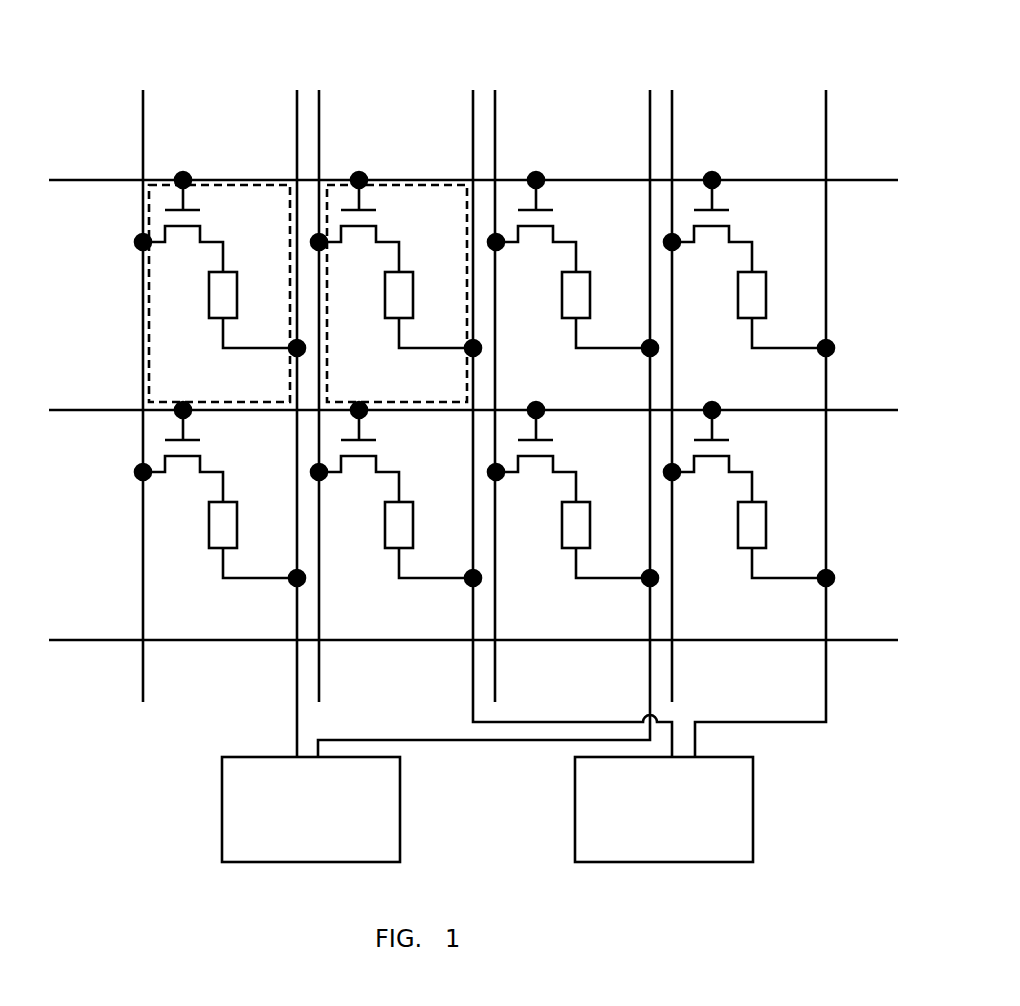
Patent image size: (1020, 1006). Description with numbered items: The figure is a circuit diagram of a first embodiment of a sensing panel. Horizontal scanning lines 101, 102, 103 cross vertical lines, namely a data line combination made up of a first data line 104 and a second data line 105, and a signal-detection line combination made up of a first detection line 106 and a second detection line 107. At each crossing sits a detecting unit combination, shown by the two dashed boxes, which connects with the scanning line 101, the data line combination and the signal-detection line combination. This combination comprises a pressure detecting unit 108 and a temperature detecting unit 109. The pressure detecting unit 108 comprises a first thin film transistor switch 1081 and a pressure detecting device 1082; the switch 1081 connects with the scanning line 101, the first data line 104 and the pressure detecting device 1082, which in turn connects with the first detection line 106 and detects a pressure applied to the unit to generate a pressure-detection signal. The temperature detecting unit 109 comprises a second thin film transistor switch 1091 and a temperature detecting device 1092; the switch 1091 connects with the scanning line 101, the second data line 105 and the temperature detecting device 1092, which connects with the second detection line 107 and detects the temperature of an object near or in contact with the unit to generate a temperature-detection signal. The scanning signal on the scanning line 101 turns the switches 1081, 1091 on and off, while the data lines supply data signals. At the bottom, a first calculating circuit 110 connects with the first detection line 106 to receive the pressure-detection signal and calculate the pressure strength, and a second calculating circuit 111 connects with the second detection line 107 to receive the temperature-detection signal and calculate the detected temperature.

The scanning line 101 is at (68, 178).
The scanning line 102 is at (83, 408).
The scanning line 103 is at (90, 638).
The first data line 104 is at (143, 90).
The second data line 105 is at (319, 90).
The first detection line 106 is at (297, 90).
The second detection line 107 is at (473, 90).
The pressure detecting unit 108 is at (220, 244).
The first thin film transistor switch 1081 is at (185, 239).
The pressure detecting device 1082 is at (235, 272).
The temperature detecting unit 109 is at (396, 244).
The second thin film transistor switch 1091 is at (358, 241).
The temperature detecting device 1092 is at (408, 272).
The first calculating circuit 110 is at (219, 805).
The second calculating circuit 111 is at (753, 812).